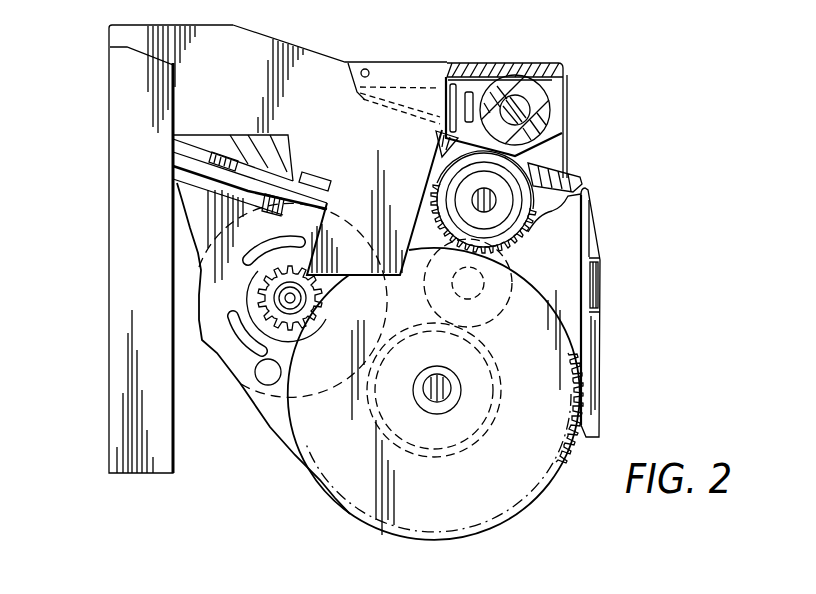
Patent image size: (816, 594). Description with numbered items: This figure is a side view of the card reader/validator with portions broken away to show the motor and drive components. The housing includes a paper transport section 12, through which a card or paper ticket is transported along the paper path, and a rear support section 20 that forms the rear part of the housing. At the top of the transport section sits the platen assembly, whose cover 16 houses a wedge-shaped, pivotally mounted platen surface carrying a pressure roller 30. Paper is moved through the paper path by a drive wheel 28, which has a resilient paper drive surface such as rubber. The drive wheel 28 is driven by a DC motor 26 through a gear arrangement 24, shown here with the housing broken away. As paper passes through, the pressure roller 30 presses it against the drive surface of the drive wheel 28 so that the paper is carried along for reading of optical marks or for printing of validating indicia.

The paper transport section 12 is at (280, 41).
The cover 16 is at (484, 63).
The rear support section 20 is at (123, 222).
The gear arrangement 24 is at (269, 426).
The DC motor 26 is at (220, 325).
The drive wheel 28 is at (567, 156).
The pressure roller 30 is at (563, 133).